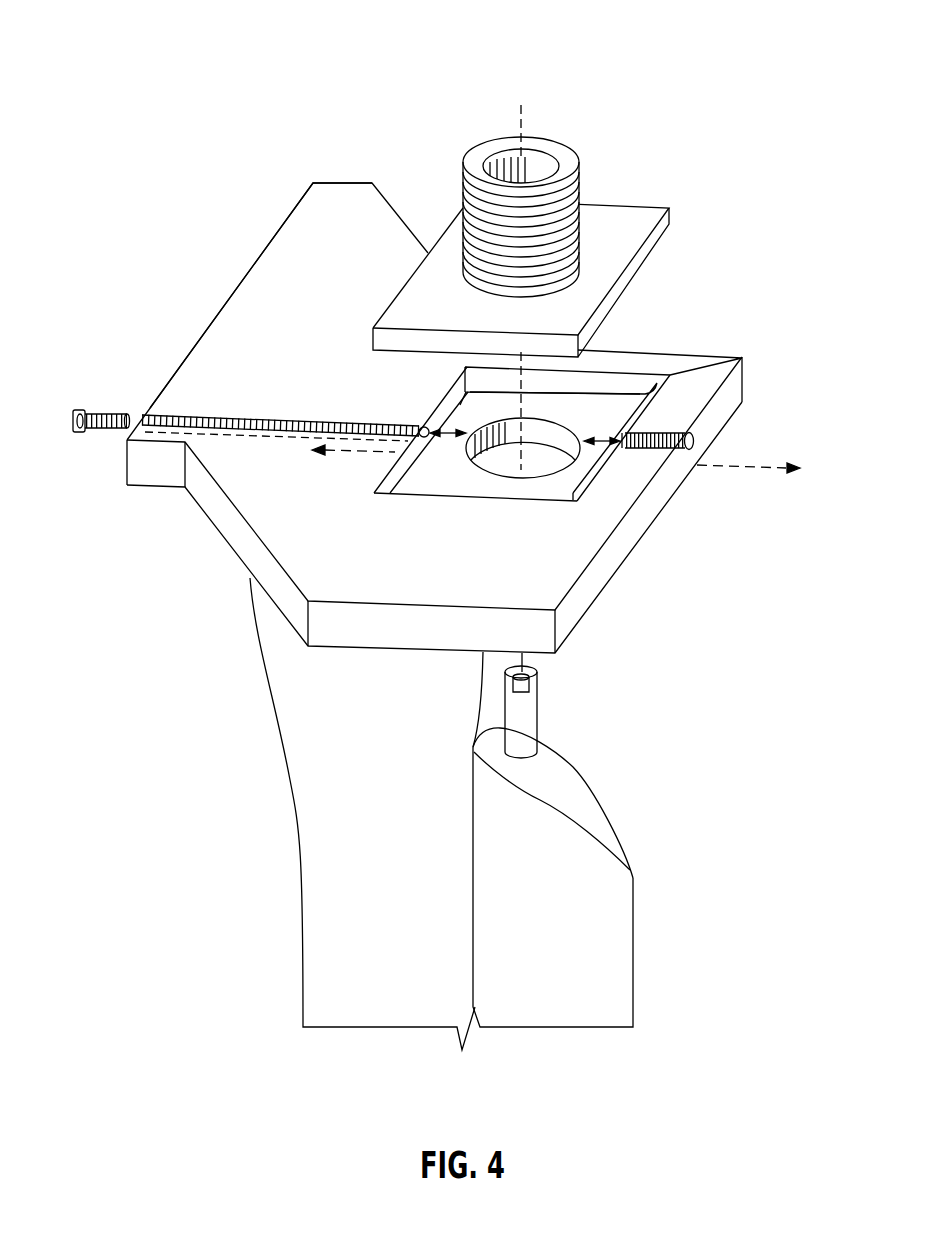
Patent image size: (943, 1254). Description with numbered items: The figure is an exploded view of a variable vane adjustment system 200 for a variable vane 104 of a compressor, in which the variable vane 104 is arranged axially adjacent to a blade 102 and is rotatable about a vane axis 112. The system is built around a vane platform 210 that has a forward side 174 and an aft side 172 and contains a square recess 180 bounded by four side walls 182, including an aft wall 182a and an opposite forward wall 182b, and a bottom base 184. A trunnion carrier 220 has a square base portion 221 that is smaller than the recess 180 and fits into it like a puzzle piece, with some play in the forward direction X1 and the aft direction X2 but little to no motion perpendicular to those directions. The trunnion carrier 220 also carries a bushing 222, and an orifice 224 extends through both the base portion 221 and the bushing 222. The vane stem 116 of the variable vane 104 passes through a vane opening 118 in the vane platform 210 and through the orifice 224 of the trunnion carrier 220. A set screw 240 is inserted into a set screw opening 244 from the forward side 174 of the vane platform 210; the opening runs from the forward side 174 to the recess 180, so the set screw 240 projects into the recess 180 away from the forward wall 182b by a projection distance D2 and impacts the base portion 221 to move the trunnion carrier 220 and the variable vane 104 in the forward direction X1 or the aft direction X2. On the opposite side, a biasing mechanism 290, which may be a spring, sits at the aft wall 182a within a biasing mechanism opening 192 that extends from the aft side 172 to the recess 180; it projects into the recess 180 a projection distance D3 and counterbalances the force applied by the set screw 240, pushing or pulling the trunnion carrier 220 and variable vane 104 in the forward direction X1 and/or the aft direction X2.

The variable vane adjustment system 200 is at (126, 33).
The blade 102 is at (398, 800).
The variable vane 104 is at (566, 925).
The vane axis 112 is at (512, 462).
The vane stem 116 is at (530, 707).
The vane opening 118 is at (474, 470).
The aft side 172 is at (577, 610).
The forward side 174 is at (198, 337).
The recess 180 is at (497, 383).
The side wall 182 is at (620, 383).
The aft wall 182a is at (655, 385).
The forward wall 182b is at (432, 415).
The bottom base 184 is at (462, 417).
The biasing mechanism opening 192 is at (630, 448).
The vane platform 210 is at (733, 355).
The trunnion carrier 220 is at (382, 164).
The base portion 221 is at (440, 252).
The bushing 222 is at (475, 177).
The orifice 224 is at (548, 168).
The set screw 240 is at (108, 432).
The set screw opening 244 is at (238, 417).
The biasing mechanism 290 is at (663, 450).
The forward direction X1 is at (360, 453).
The aft direction X2 is at (757, 467).
The projection distance D2 is at (442, 464).
The projection distance D3 is at (600, 444).